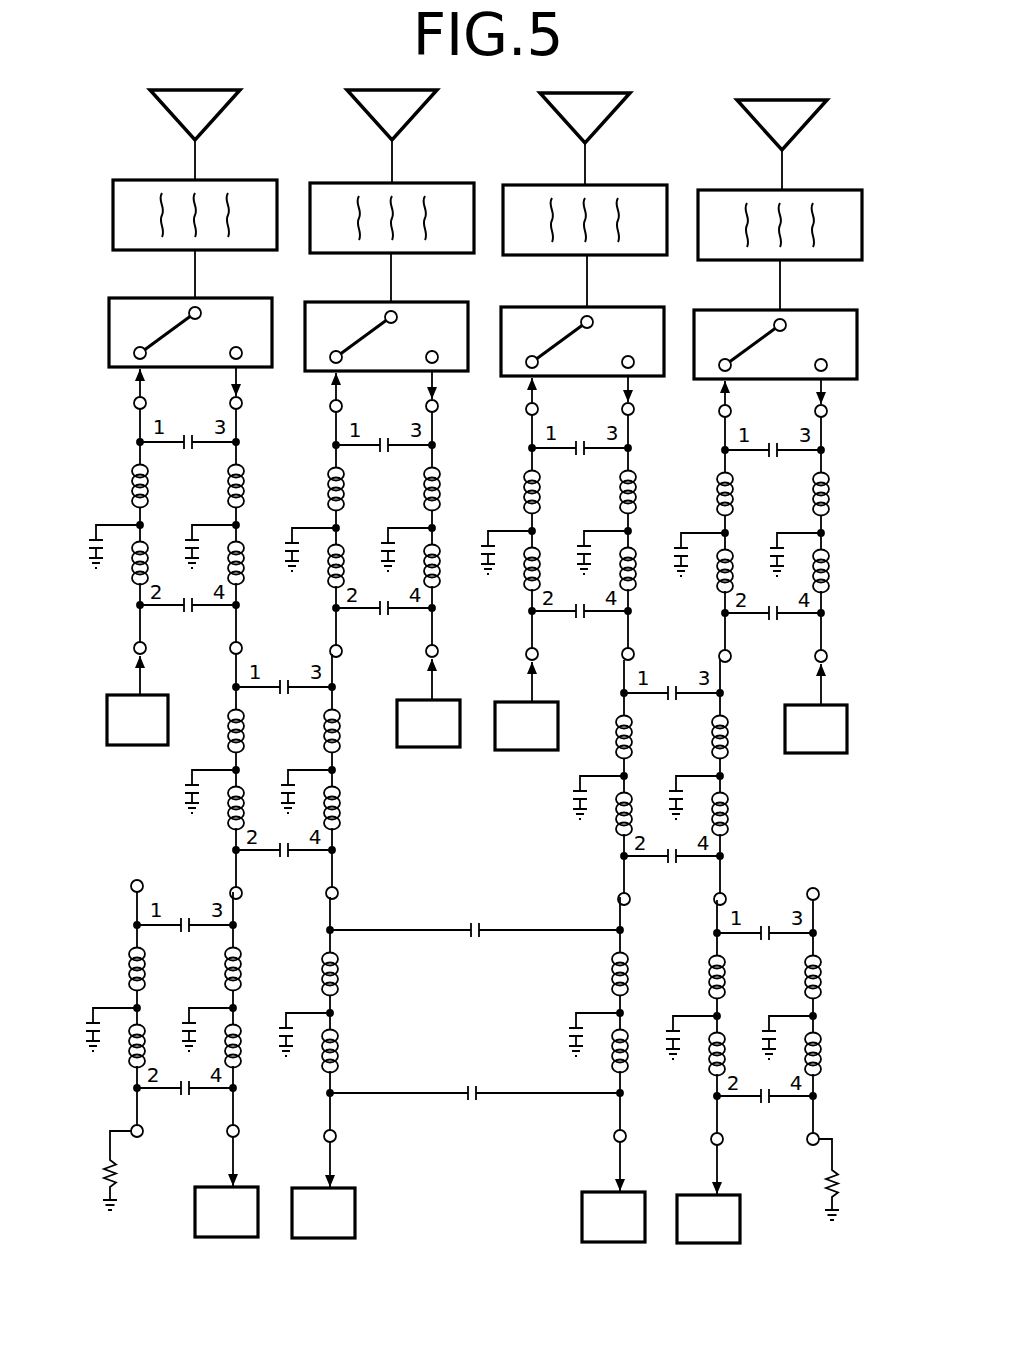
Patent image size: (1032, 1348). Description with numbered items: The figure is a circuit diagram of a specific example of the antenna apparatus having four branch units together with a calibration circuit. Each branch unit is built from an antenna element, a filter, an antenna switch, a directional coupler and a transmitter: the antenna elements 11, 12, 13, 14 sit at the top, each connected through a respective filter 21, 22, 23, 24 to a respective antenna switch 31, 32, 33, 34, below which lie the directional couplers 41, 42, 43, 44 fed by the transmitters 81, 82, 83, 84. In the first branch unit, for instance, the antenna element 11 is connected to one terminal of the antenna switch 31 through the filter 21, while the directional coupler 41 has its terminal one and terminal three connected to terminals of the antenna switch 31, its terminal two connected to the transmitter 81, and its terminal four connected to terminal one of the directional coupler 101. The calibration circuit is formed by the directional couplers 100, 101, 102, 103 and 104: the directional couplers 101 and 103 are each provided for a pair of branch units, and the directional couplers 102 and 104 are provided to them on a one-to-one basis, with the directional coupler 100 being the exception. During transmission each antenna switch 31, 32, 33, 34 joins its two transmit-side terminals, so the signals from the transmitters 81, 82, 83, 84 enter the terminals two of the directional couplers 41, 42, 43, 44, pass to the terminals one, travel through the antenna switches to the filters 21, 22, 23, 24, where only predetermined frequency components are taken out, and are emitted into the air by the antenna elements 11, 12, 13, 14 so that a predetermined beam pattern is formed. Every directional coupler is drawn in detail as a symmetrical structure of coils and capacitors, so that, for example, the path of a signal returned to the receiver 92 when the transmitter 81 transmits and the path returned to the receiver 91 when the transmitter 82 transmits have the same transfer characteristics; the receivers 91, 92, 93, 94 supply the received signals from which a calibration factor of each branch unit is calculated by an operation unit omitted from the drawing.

The antenna element 11 is at (215, 119).
The antenna element 12 is at (412, 118).
The antenna element 13 is at (605, 122).
The antenna element 14 is at (800, 128).
The filter 21 is at (125, 181).
The filter 22 is at (330, 184).
The filter 23 is at (548, 186).
The filter 24 is at (738, 191).
The antenna switch 31 is at (120, 299).
The antenna switch 32 is at (316, 303).
The antenna switch 33 is at (512, 308).
The antenna switch 34 is at (704, 311).
The directional coupler 41 is at (266, 513).
The directional coupler 42 is at (460, 519).
The directional coupler 43 is at (654, 522).
The directional coupler 44 is at (850, 524).
The directional coupler 100 is at (258, 957).
The directional coupler 101 is at (352, 712).
The directional coupler 102 is at (460, 899).
The directional coupler 103 is at (740, 719).
The directional coupler 104 is at (695, 966).
The transmitter 81 is at (118, 746).
The transmitter 82 is at (412, 748).
The transmitter 83 is at (508, 751).
The transmitter 84 is at (800, 754).
The receiver 91 is at (208, 1238).
The receiver 92 is at (335, 1239).
The receiver 93 is at (595, 1243).
The receiver 94 is at (720, 1244).